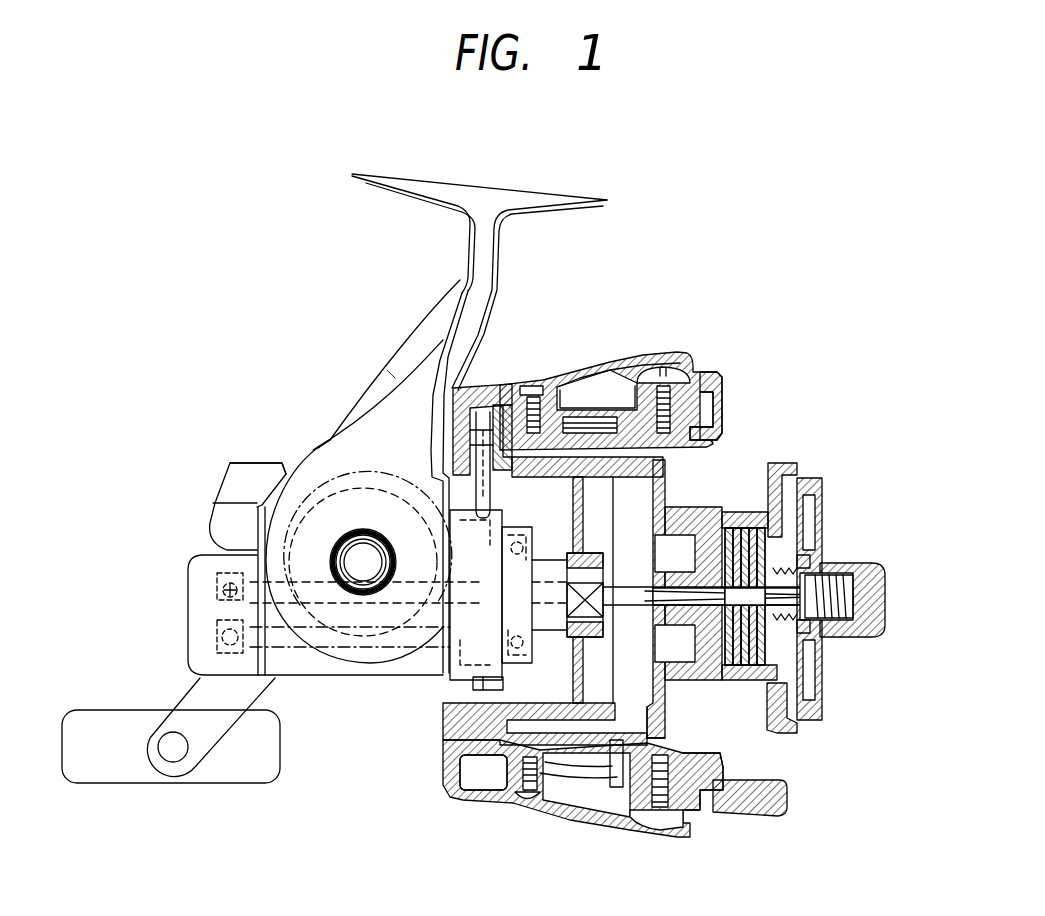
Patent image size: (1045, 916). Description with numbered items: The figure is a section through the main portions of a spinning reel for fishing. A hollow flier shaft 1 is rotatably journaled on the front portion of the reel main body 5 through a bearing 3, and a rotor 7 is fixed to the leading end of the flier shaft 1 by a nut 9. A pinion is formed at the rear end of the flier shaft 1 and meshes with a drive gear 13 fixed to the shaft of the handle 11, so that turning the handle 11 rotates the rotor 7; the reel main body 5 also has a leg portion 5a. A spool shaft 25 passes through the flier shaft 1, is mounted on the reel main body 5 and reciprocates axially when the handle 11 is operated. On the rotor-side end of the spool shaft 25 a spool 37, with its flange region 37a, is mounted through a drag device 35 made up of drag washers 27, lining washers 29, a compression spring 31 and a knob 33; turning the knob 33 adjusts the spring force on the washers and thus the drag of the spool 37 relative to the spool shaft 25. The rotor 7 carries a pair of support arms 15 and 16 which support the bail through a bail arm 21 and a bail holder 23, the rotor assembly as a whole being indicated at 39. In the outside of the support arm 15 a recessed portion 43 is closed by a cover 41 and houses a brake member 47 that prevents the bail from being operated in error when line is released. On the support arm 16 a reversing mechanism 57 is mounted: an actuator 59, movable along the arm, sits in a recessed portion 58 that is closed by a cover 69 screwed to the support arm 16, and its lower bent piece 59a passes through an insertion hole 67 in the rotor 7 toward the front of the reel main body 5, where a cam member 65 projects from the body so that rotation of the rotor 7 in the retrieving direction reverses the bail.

The flier shaft 1 is at (546, 560).
The bearing 3 is at (532, 660).
The reel main body 5 is at (312, 668).
The leg portion 5a is at (385, 373).
The rotor 7 is at (548, 474).
The nut 9 is at (607, 575).
The handle 11 is at (190, 700).
The drive gear 13 is at (300, 515).
The support arm 15 is at (457, 742).
The support arm 16 is at (612, 418).
The bail arm 21 is at (724, 382).
The bail holder 23 is at (781, 815).
The spool shaft 25 is at (848, 640).
The drag washers 27 is at (766, 556).
The lining washers 29 is at (797, 700).
The compression spring 31 is at (833, 588).
The knob 33 is at (885, 622).
The drag device 35 is at (805, 567).
The spool 37 is at (733, 522).
The spool flange 37a is at (650, 737).
The rotor arm 39 is at (431, 292).
The cover 41 is at (687, 835).
The recessed portion 43 is at (563, 797).
The brake member 47 is at (583, 793).
The reversing mechanism 57 is at (443, 397).
The recessed portion 58 is at (590, 392).
The actuator 59 is at (472, 403).
The bent piece 59a is at (430, 458).
The cam member 65 is at (477, 684).
The insertion hole 67 is at (433, 427).
The cover 69 is at (700, 357).